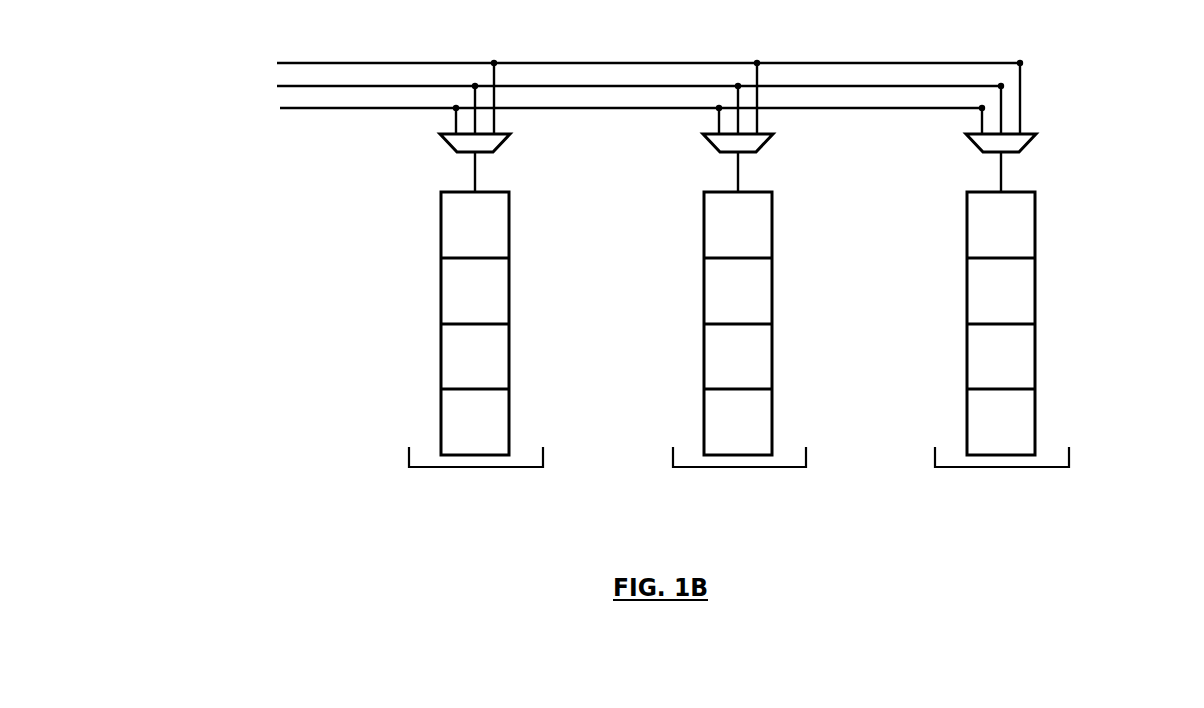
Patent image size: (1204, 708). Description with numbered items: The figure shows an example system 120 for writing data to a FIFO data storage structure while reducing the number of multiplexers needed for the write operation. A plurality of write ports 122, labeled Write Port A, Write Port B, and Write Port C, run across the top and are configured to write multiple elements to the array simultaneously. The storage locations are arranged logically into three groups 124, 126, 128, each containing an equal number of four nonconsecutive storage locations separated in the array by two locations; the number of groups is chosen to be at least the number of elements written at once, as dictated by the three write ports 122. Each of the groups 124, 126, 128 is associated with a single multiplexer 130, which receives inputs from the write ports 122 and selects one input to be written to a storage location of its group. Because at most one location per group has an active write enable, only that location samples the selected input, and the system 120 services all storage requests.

The system 120 is at (1124, 118).
The write ports 122 is at (330, 62).
The group 124 is at (470, 502).
The group 126 is at (736, 502).
The group 128 is at (1000, 502).
The multiplexer 130 is at (448, 146).